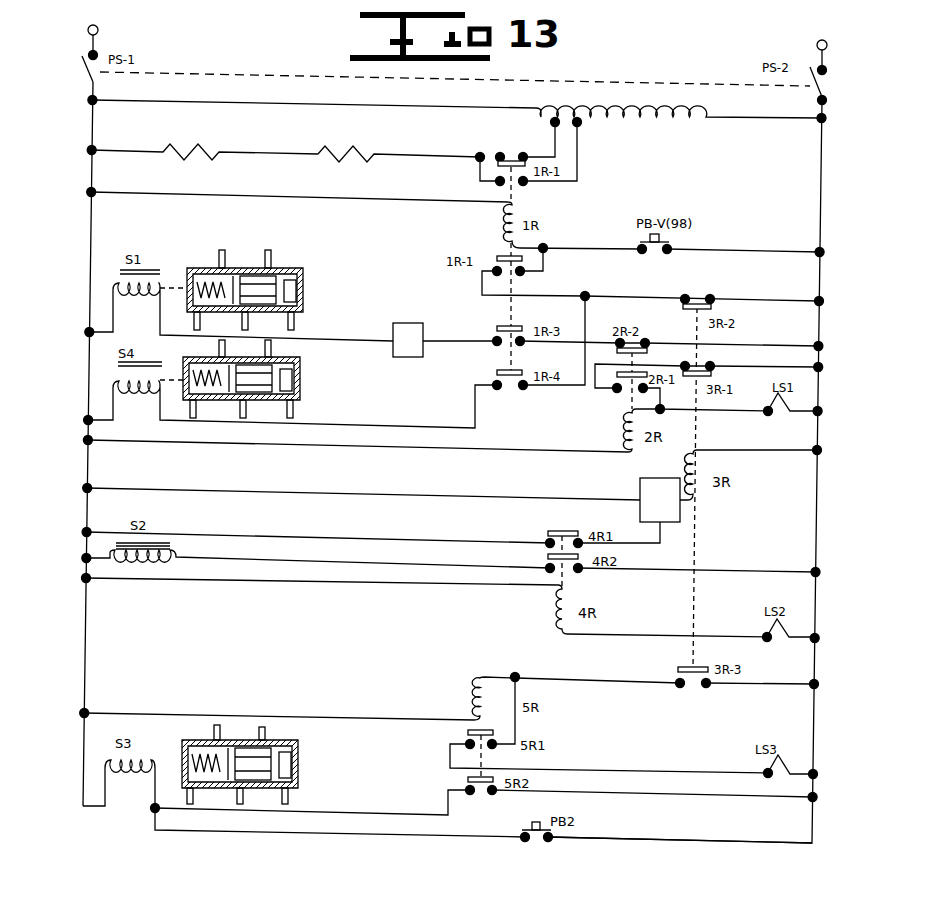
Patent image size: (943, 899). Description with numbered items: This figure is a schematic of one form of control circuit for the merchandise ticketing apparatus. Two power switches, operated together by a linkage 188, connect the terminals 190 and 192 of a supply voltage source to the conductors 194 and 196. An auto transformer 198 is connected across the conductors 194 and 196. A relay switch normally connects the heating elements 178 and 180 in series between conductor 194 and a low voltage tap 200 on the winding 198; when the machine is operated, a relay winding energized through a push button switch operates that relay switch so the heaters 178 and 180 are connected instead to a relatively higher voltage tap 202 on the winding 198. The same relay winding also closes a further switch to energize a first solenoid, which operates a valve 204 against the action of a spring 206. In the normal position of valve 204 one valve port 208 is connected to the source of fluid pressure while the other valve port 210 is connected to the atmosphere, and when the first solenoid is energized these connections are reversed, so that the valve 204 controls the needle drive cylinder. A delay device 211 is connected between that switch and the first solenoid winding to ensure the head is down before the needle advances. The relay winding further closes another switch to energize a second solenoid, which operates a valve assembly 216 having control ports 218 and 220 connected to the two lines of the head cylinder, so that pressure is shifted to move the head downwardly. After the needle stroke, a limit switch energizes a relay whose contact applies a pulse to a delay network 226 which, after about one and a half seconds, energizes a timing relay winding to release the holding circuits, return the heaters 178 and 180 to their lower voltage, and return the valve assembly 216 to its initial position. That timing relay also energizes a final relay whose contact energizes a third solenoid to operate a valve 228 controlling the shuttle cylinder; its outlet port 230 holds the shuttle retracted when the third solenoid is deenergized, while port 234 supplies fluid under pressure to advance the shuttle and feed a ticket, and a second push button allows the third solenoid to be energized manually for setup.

The terminal 190 is at (102, 28).
The terminal 192 is at (826, 40).
The conductor 194 is at (88, 140).
The conductor 196 is at (820, 190).
The auto transformer 198 is at (648, 128).
The low voltage tap 200 is at (550, 125).
The higher voltage tap 202 is at (580, 126).
The heating element 178 is at (210, 146).
The heating element 180 is at (366, 148).
The linkage 188 is at (605, 78).
The valve 204 is at (314, 270).
The spring 206 is at (208, 282).
The valve port 208 is at (276, 250).
The valve port 210 is at (215, 250).
The delay device 211 is at (408, 323).
The valve assembly 216 is at (313, 392).
The control port 218 is at (272, 346).
The control port 220 is at (216, 344).
The delay network 226 is at (640, 486).
The valve 228 is at (300, 740).
The outlet port 230 is at (262, 727).
The port 234 is at (217, 725).